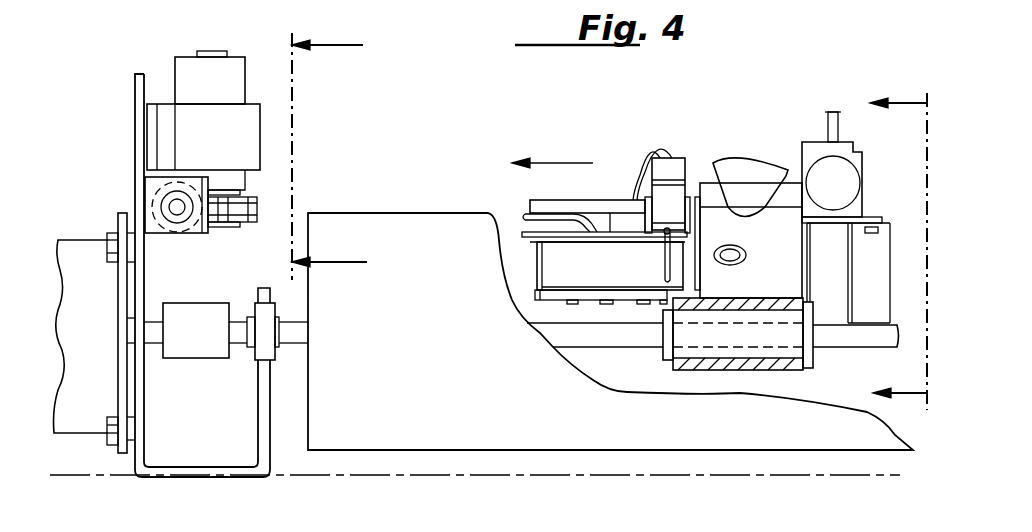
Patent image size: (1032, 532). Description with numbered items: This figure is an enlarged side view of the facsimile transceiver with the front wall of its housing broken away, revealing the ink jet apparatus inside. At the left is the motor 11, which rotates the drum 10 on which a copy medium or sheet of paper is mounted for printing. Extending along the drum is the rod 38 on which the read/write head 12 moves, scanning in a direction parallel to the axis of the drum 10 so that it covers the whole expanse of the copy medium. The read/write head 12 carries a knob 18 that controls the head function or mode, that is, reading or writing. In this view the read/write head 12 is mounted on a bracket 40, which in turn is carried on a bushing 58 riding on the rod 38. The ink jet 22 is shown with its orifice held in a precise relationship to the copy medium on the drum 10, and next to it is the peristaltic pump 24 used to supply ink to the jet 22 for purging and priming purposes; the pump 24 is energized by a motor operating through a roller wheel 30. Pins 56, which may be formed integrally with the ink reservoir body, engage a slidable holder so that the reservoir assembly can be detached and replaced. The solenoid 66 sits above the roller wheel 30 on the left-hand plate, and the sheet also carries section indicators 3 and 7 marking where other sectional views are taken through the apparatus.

The drum 10 is at (415, 378).
The motor 11 is at (100, 357).
The read/write head 12 is at (912, 208).
The knob 18 is at (745, 163).
The ink jet 22 is at (675, 167).
The peristaltic pump 24 is at (597, 203).
The roller wheel 30 is at (258, 213).
The rod 38 is at (575, 335).
The bracket 40 is at (663, 368).
The pins 56 is at (570, 308).
The bushing 58 is at (713, 353).
The solenoid valve 66 is at (230, 75).
The section line 3- 3 is at (887, 251).
The section line 7- 7 is at (339, 156).